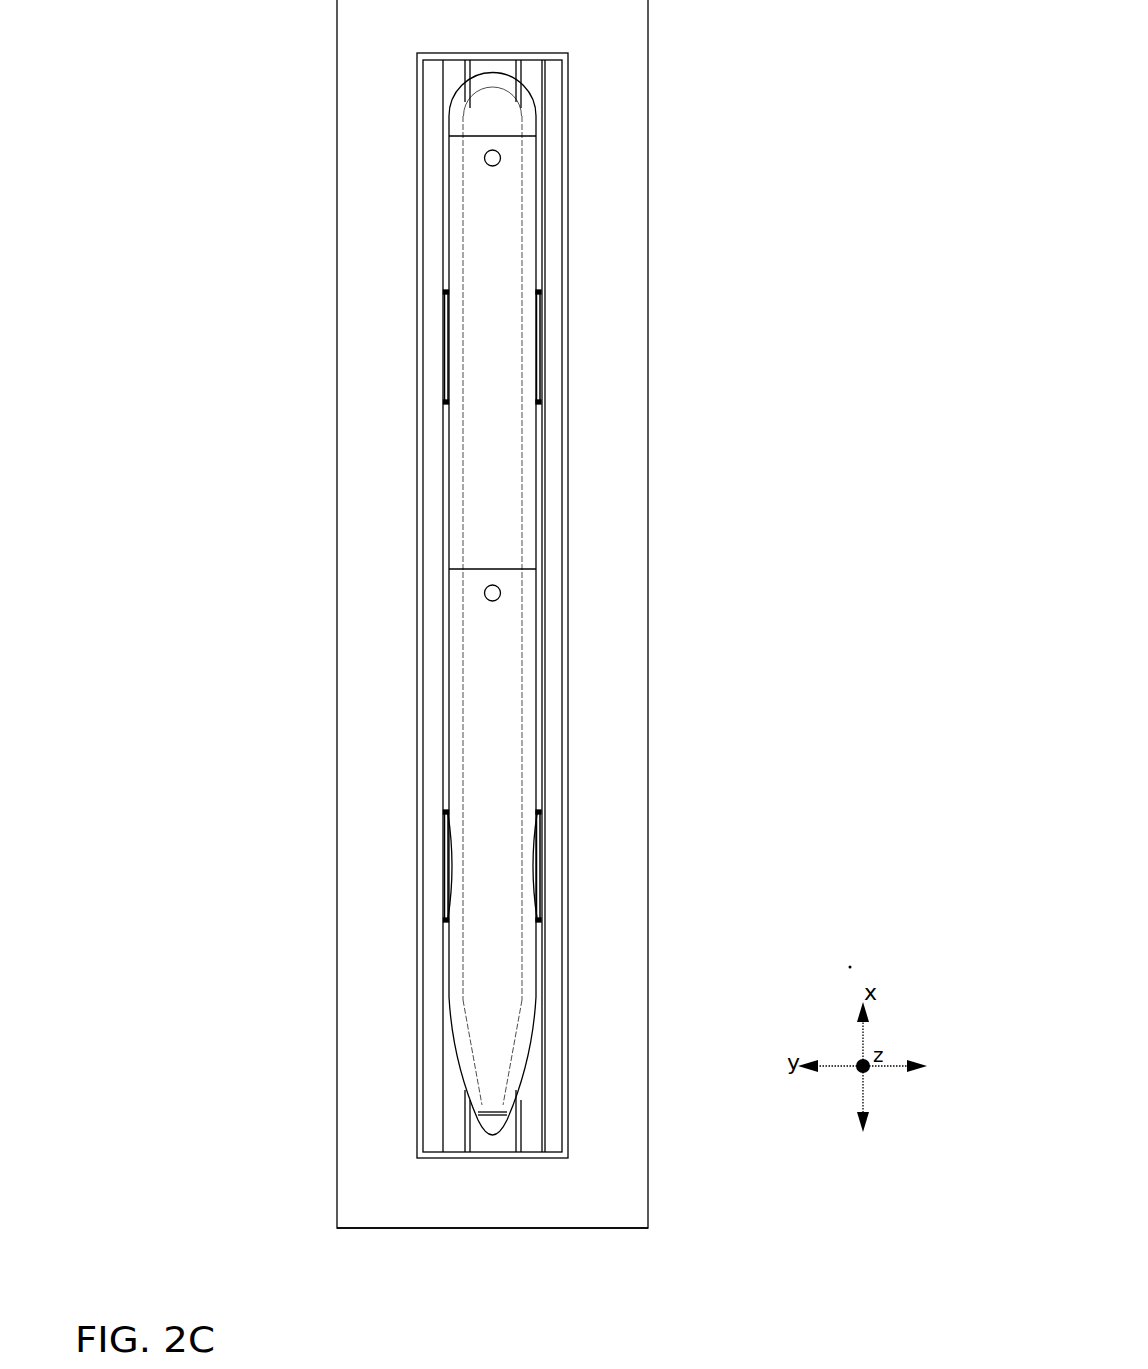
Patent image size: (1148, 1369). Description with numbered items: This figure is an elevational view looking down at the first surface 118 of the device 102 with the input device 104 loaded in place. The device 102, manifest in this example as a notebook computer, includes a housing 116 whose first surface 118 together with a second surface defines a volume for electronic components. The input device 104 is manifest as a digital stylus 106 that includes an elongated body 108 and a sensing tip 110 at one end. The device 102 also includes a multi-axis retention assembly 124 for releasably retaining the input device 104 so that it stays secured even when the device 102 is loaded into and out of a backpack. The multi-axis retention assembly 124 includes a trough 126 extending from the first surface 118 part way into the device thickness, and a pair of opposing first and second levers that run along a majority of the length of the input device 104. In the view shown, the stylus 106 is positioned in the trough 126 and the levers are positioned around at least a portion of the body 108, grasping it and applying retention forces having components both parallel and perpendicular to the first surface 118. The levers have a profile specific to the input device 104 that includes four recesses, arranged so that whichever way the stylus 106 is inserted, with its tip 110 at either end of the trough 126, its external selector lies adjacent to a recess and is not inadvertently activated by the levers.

The device 102 is at (308, 1076).
The input device 104 is at (631, 685).
The stylus 106 is at (631, 685).
The body 108 is at (507, 437).
The sensing tip 110 is at (477, 1152).
The housing 116 is at (655, 683).
The first surface 118 is at (598, 1196).
The multi-axis retention assembly 124 is at (497, 670).
The trough 126 is at (487, 1140).